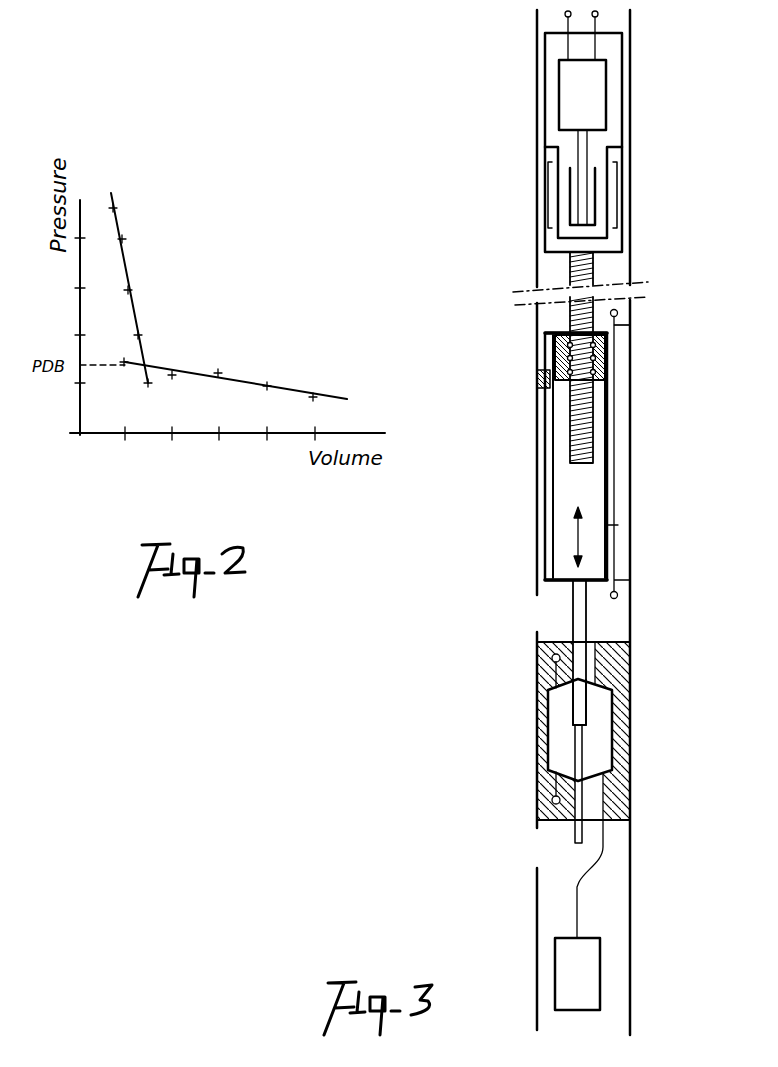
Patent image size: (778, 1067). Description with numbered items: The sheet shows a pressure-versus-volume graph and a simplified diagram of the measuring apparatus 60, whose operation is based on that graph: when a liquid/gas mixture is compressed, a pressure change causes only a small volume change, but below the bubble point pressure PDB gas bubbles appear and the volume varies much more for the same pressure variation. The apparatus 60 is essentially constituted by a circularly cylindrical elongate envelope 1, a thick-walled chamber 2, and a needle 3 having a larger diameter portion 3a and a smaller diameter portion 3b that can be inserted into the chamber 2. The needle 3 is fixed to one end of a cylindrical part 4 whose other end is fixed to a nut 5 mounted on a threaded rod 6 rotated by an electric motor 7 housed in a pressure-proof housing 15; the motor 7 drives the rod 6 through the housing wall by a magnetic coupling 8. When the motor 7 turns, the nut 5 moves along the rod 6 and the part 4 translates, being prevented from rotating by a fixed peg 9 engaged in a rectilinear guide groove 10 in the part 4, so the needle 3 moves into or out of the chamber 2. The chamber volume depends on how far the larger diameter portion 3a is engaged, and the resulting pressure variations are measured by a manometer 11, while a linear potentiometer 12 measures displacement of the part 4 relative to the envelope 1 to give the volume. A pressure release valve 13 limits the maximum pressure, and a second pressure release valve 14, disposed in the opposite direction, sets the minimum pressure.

The envelope 1 is at (630, 915).
The chamber 2 is at (598, 730).
The needle 3 is at (573, 612).
The larger diameter portion 3a is at (573, 708).
The smaller diameter portion 3b is at (575, 753).
The cylindrical part 4 is at (607, 480).
The nut 5 is at (555, 347).
The threaded rod 6 is at (593, 418).
The electric motor 7 is at (571, 100).
The magnetic coupling 8 is at (546, 207).
The fixed peg 9 is at (537, 380).
The rectilinear guide groove 10 is at (553, 500).
The manometer 11 is at (567, 975).
The linear potentiometer 12 is at (622, 553).
The pressure release valve 13 is at (552, 658).
The second pressure release valve 14 is at (552, 803).
The pressure-proof housing 15 is at (622, 100).
The measuring apparatus 60 is at (655, 363).